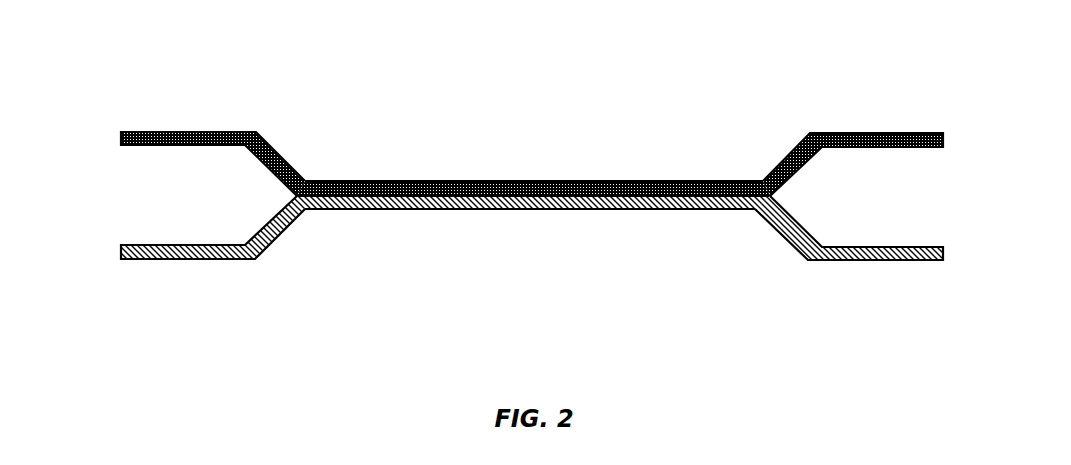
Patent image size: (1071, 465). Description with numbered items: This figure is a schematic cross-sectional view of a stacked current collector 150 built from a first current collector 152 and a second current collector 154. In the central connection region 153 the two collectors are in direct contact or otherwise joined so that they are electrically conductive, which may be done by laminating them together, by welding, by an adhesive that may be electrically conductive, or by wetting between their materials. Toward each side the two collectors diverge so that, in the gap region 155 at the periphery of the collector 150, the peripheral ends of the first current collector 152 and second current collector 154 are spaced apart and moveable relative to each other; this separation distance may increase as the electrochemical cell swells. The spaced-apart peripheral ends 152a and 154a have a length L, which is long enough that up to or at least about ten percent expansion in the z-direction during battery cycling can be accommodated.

The stacked current collector 150 is at (342, 79).
The first current collector 152 is at (848, 133).
The peripheral end of the first current collector 152a is at (197, 132).
The connection region 153 is at (763, 230).
The second current collector 154 is at (877, 247).
The peripheral end of the second current collector 154a is at (215, 245).
The gap region 155 is at (115, 123).
The length L is at (302, 267).